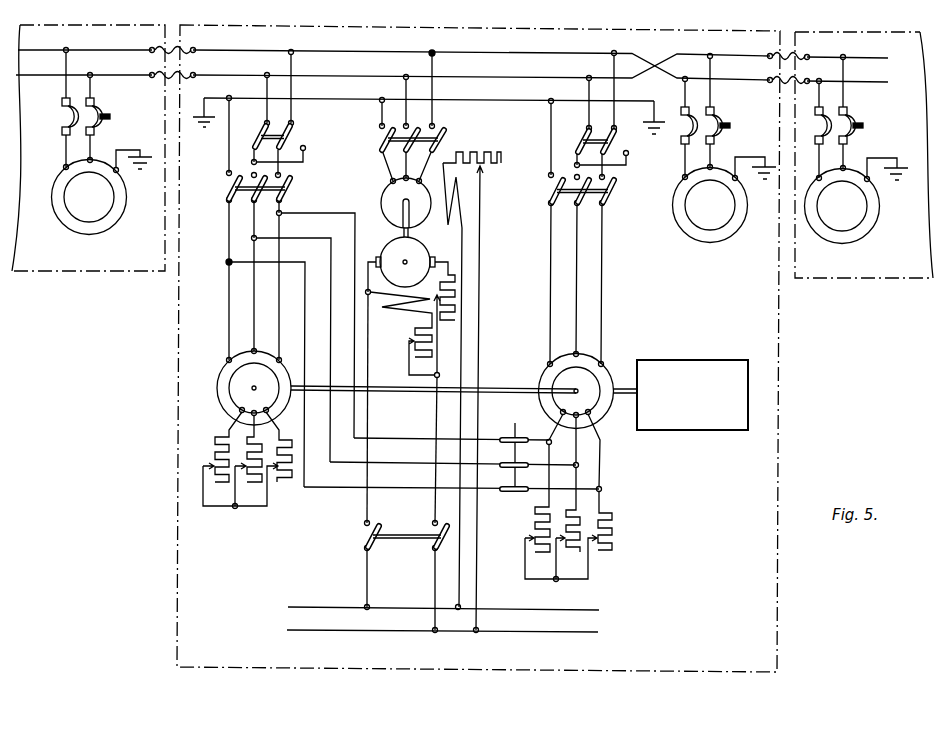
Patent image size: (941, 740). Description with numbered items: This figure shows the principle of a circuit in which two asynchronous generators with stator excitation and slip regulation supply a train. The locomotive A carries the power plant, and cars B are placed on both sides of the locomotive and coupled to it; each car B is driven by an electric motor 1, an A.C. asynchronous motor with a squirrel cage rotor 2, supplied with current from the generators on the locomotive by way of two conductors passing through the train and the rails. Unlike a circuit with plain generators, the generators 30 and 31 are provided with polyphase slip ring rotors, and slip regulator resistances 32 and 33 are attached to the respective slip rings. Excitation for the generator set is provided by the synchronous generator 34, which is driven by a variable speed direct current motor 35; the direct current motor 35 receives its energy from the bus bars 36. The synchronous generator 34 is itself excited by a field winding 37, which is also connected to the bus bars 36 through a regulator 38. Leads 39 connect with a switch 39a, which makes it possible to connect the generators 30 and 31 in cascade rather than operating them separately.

The electric motor 1 is at (126, 211).
The squirrel cage rotor 2 is at (105, 223).
The locomotive A is at (178, 338).
The car B is at (100, 272).
The asynchronous generator 30 is at (213, 363).
The asynchronous generator 31 is at (533, 367).
The slip regulator resistance 32 is at (288, 533).
The slip regulator resistance 33 is at (620, 583).
The synchronous generator 34 is at (378, 195).
The variable speed direct current motor 35 is at (449, 252).
The bus bars 36 is at (538, 633).
The field winding 37 is at (458, 193).
The regulator 38 is at (478, 160).
The leads 39 is at (352, 488).
The switch 39a is at (515, 436).